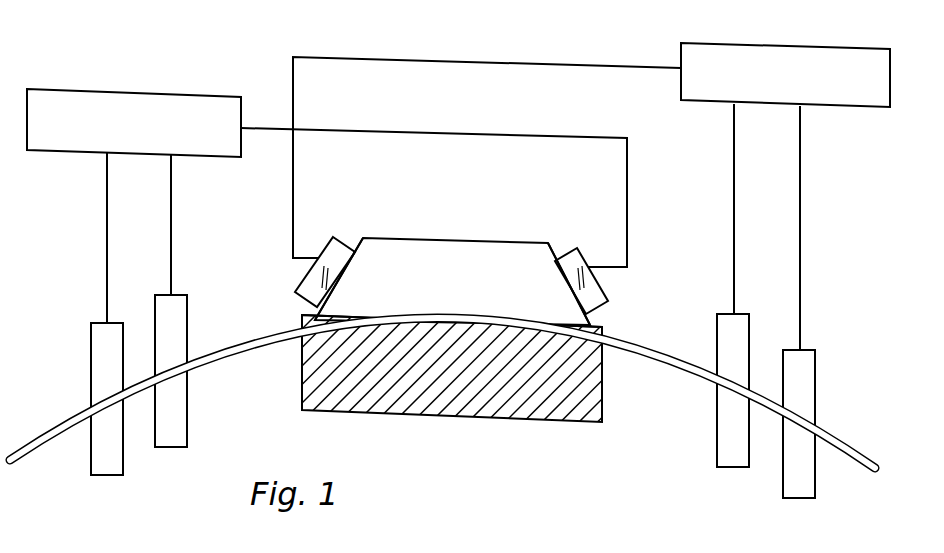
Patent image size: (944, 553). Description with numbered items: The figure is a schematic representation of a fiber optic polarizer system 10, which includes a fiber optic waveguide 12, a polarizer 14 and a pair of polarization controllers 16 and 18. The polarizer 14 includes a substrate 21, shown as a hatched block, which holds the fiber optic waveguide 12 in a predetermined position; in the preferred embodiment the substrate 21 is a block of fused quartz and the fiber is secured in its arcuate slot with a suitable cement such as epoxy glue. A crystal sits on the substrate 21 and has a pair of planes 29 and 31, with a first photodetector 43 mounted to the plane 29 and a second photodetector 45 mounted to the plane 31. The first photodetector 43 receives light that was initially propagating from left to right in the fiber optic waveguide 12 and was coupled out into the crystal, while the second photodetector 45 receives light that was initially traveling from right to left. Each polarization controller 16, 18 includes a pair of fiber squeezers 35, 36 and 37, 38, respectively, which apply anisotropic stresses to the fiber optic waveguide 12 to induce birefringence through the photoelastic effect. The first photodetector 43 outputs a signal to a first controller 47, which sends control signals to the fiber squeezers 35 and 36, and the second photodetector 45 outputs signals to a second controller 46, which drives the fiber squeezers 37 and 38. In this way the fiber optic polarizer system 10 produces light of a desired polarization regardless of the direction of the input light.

The fiber optic polarizer system 10 is at (479, 347).
The fiber optic waveguide 12 is at (30, 449).
The polarizer 14 is at (618, 325).
The polarization controller 16 is at (165, 346).
The polarization controller 18 is at (754, 325).
The substrate 21 is at (462, 412).
The plane 29 is at (553, 245).
The plane 31 is at (358, 240).
The fiber squeezer 35 is at (105, 476).
The fiber squeezer 36 is at (188, 420).
The fiber squeezer 37 is at (717, 435).
The fiber squeezer 38 is at (812, 490).
The first photodetector 43 is at (585, 260).
The second photodetector 45 is at (301, 280).
The second controller 46 is at (682, 44).
The first controller 47 is at (163, 94).